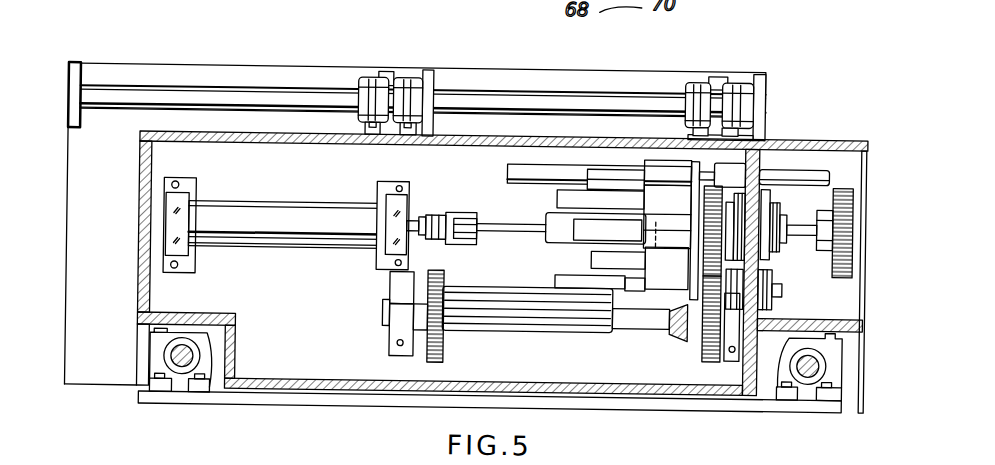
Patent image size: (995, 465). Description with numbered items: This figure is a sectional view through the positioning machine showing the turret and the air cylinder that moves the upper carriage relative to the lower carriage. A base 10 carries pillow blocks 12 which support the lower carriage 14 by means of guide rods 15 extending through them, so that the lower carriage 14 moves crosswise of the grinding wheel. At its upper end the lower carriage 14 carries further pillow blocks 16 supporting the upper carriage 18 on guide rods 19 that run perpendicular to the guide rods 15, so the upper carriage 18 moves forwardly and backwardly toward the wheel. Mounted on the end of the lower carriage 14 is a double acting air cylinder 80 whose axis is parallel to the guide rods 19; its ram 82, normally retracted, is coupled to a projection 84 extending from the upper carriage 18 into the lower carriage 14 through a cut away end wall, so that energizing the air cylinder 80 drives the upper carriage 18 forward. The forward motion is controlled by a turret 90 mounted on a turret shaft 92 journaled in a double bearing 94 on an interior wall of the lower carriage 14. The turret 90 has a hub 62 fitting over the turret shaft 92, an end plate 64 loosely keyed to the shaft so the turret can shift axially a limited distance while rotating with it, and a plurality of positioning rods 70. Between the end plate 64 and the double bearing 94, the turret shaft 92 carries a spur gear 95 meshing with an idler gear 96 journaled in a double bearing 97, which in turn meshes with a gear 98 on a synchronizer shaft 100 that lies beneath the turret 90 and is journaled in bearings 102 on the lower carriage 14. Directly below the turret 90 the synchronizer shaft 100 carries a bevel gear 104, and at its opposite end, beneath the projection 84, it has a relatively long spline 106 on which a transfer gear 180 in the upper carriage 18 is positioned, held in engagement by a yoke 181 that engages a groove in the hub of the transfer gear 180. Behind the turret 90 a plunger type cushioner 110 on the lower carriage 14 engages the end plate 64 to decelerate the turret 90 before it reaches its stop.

The base 10 is at (309, 396).
The pillow blocks 12 is at (166, 353).
The lower carriage 14 is at (136, 287).
The guide rods 15 is at (186, 360).
The pillow blocks 16 is at (362, 71).
The upper carriage 18 is at (125, 62).
The guide rods 19 is at (188, 100).
The hub 62 is at (557, 216).
The end plate 64 is at (695, 152).
The positioning rods 70 is at (522, 168).
The air cylinder 80 is at (255, 211).
The ram 82 is at (420, 219).
The projection 84 is at (485, 227).
The turret 90 is at (588, 255).
The turret shaft 92 is at (802, 229).
The double bearing 94 is at (773, 223).
The spur gear 95 is at (725, 187).
The idler gear 96 is at (712, 269).
The double bearing 97 is at (784, 283).
The gear 98 is at (713, 354).
The synchronizer shaft 100 is at (618, 325).
The bearings 102 is at (393, 334).
The bevel gear 104 is at (681, 331).
The spline 106 is at (480, 317).
The plunger type cushioner 110 is at (810, 164).
The transfer gear 180 is at (440, 360).
The yoke 181 is at (393, 282).